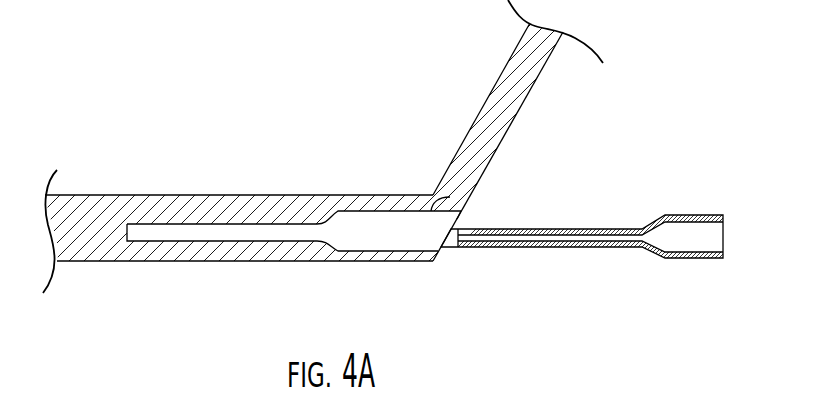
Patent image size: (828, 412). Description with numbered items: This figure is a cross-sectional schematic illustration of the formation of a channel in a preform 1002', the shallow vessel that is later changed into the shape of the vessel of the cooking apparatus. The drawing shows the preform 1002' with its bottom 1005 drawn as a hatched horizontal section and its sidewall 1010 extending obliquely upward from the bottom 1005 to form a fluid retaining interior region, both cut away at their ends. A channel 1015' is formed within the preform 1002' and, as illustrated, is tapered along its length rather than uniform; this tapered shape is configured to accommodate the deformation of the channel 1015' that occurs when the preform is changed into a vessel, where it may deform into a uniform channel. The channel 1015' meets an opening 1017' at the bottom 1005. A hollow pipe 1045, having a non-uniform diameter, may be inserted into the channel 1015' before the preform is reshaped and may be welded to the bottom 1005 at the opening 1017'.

The preform 1002' is at (412, 152).
The catheter body 1005 is at (310, 262).
The side branch / hub arm 1010 is at (518, 112).
The channel 1015' is at (489, 182).
The opening 1017' is at (523, 203).
The hollow pipe 1045 is at (592, 229).